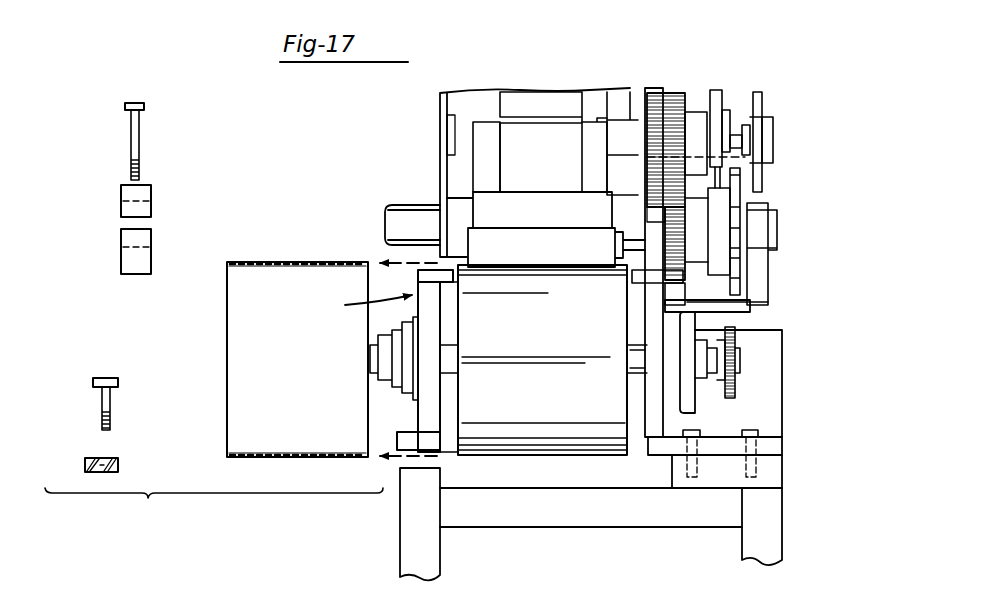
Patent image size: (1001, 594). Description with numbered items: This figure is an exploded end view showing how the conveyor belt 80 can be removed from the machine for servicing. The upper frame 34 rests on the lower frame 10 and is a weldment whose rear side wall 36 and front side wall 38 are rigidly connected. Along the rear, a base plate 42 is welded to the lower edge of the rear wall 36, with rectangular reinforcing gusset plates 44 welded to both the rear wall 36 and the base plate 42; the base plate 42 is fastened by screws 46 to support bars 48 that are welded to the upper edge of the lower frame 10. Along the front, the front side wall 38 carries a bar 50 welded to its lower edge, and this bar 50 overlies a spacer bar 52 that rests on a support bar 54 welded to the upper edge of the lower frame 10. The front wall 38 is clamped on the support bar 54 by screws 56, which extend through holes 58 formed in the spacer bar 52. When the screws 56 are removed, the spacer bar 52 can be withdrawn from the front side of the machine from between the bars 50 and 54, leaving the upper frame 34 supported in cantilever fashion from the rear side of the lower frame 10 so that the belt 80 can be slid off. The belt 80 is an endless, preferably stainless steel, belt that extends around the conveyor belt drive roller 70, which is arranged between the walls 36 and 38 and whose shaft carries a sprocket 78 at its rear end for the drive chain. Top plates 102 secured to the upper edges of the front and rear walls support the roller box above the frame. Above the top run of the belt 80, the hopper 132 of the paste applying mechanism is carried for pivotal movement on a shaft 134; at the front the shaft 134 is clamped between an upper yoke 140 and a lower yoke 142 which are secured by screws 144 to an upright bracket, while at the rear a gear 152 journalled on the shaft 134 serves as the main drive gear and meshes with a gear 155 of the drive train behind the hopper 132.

The lower frame 10 is at (800, 525).
The upper frame 34 is at (358, 311).
The rear side wall 36 is at (653, 393).
The front side wall 38 is at (432, 407).
The base plate 42 is at (772, 445).
The reinforcing gusset plates 44 is at (782, 345).
The screws 46 is at (757, 432).
The support bars 48 is at (772, 475).
The bar 50 is at (433, 442).
The spacer bar 52 is at (85, 467).
The support bar 54 is at (404, 480).
The screws 56 is at (110, 403).
The holes 58 is at (105, 460).
The conveyor belt drive roller 70 is at (552, 443).
The sprocket 78 is at (737, 387).
The endless conveyor belt 80 is at (282, 260).
The top plates 102 is at (453, 283).
The hopper 132 is at (478, 82).
The shaft 134 is at (403, 217).
The upper yoke 140 is at (148, 197).
The lower yoke 142 is at (147, 257).
The screws 144 is at (135, 128).
The gear 152 is at (685, 275).
The gear 155 is at (665, 98).